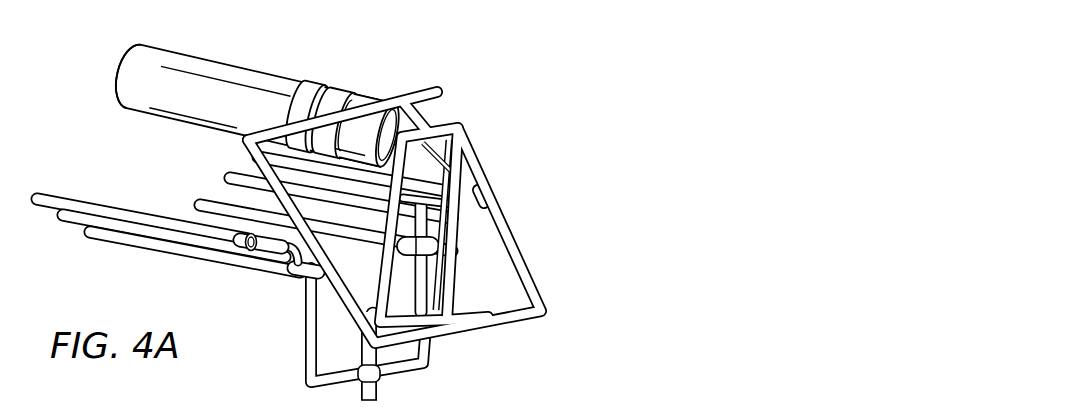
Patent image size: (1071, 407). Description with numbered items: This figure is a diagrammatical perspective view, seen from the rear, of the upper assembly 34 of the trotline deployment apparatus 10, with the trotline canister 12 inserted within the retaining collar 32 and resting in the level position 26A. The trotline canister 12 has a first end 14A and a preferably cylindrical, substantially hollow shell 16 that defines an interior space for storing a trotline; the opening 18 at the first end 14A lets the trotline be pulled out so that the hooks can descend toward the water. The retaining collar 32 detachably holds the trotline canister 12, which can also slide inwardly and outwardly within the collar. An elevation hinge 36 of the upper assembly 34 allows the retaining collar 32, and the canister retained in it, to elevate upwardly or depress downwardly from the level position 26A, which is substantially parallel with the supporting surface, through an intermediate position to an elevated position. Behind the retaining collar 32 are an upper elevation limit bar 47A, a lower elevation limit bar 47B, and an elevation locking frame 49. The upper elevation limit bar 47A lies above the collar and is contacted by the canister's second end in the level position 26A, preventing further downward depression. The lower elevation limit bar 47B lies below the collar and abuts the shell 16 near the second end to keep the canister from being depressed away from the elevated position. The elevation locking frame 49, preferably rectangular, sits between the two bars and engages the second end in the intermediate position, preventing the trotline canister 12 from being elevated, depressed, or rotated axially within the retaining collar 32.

The trotline deployment apparatus 10 is at (530, 139).
The trotline canister 12 is at (232, 93).
The first end 14A is at (131, 57).
The shell 16 is at (203, 132).
The opening 18 is at (116, 82).
The level position 26A is at (468, 106).
The retaining collar 32 is at (342, 95).
The upper assembly 34 is at (518, 244).
The elevation hinge 36 is at (300, 107).
The upper elevation limit bar 47A is at (396, 95).
The lower elevation limit bar 47B is at (422, 198).
The elevation locking frame 49 is at (420, 203).